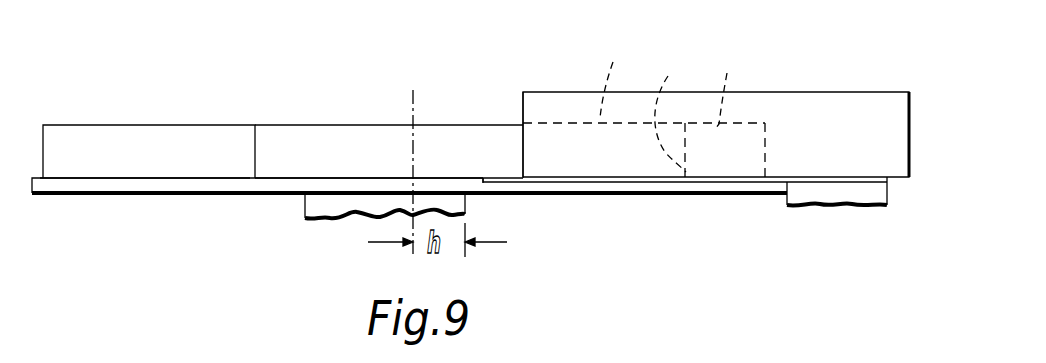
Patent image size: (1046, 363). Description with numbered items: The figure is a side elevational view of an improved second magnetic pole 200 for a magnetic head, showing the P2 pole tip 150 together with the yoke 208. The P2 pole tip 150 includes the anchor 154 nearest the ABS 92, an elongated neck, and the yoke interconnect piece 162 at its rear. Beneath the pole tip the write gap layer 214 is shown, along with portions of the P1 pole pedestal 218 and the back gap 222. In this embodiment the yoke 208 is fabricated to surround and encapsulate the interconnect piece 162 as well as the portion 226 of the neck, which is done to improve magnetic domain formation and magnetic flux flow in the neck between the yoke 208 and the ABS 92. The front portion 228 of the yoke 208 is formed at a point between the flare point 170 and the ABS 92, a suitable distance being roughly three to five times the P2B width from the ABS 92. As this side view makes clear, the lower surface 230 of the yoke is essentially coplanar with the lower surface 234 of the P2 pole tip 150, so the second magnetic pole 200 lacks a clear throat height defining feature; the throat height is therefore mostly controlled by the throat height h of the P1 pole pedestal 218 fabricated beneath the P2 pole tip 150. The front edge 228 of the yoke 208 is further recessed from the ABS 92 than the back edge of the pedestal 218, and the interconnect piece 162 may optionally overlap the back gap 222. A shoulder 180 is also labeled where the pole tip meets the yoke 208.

The ABS 92 is at (413, 107).
The P2 pole tip 150 is at (276, 112).
The anchor 154 is at (111, 137).
The yoke interconnect piece 162 is at (746, 86).
The flare point 170 is at (255, 158).
The shoulder 180 is at (522, 124).
The second magnetic pole 200 is at (622, 83).
The yoke 208 is at (830, 100).
The write gap layer 214 is at (249, 184).
The P1 pole pedestal 218 is at (353, 207).
The back gap 222 is at (855, 192).
The portion of the neck 226 is at (586, 78).
The front portion of the yoke 228 is at (523, 100).
The lower surface of the yoke 230 is at (582, 181).
The lower surface of the P2 pole tip 234 is at (483, 187).